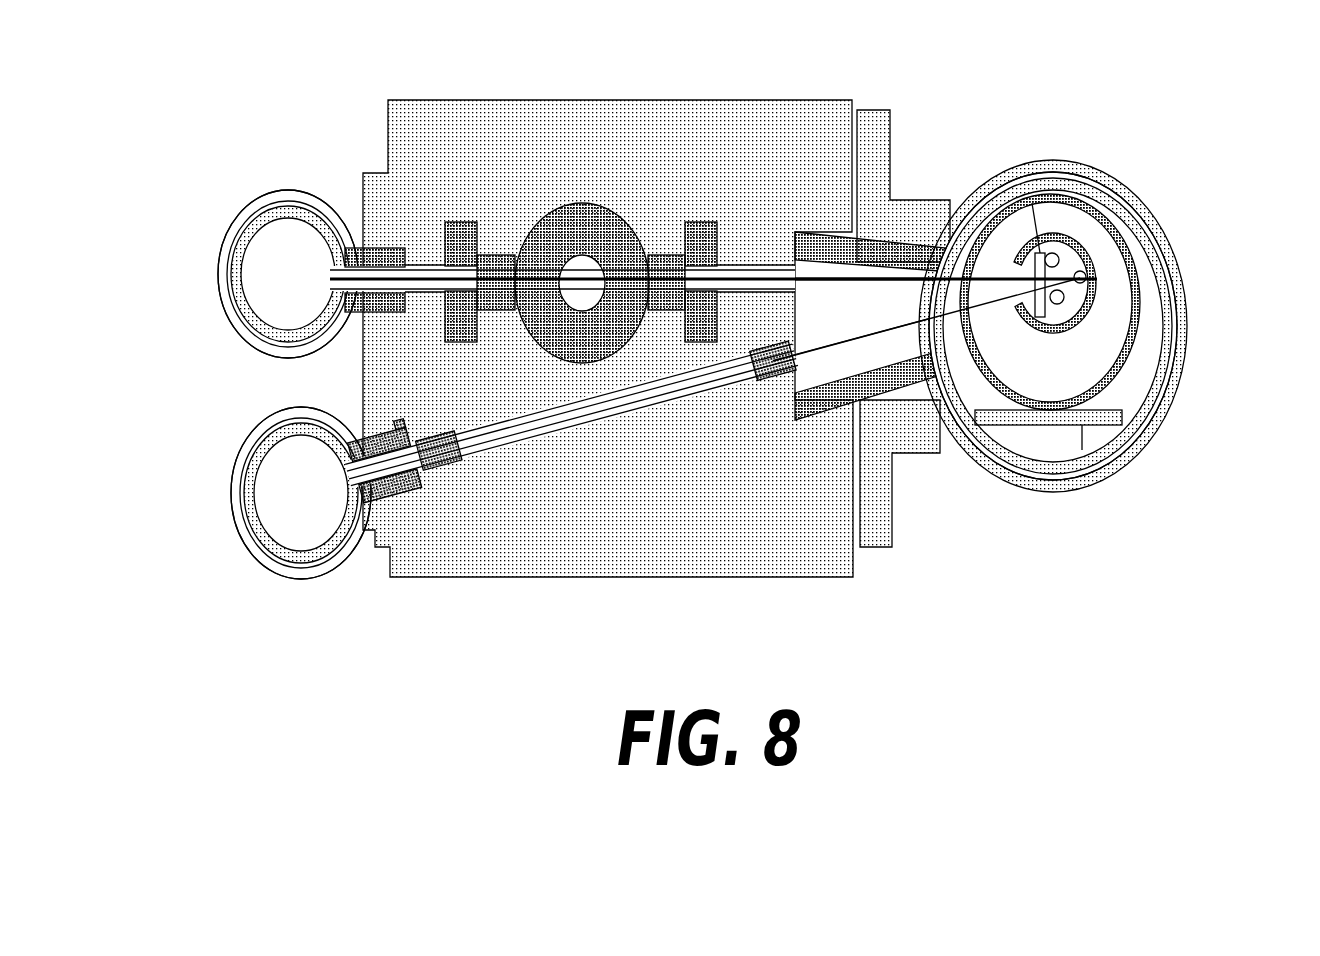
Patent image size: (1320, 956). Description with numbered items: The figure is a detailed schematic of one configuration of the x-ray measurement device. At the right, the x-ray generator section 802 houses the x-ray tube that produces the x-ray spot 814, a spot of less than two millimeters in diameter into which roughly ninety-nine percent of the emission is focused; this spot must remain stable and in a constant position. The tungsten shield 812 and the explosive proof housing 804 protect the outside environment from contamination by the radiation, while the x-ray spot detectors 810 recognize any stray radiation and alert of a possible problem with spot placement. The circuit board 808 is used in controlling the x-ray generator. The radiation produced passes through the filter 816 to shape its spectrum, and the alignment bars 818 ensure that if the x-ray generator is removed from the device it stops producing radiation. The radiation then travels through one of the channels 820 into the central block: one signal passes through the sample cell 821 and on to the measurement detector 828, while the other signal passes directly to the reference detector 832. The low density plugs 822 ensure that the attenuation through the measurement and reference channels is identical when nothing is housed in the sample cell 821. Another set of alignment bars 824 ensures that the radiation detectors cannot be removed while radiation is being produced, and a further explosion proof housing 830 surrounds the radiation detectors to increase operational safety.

The x-ray generator section 802 is at (968, 467).
The explosive proof housing 804 is at (1007, 494).
The circuit board 808 is at (1135, 460).
The x-ray spot detectors 810 is at (1058, 232).
The tungsten shield 812 is at (1098, 279).
The x-ray spot 814 is at (1095, 248).
The filter 816 is at (1007, 207).
The alignment bars 818 is at (925, 357).
The channels 820 is at (790, 340).
The sample cell 821 is at (528, 205).
The low density plugs 822 is at (448, 470).
The alignment bars 824 is at (403, 522).
The measurement detector 828 is at (240, 210).
The explosion proof housing 830 is at (227, 316).
The reference detector 832 is at (256, 566).